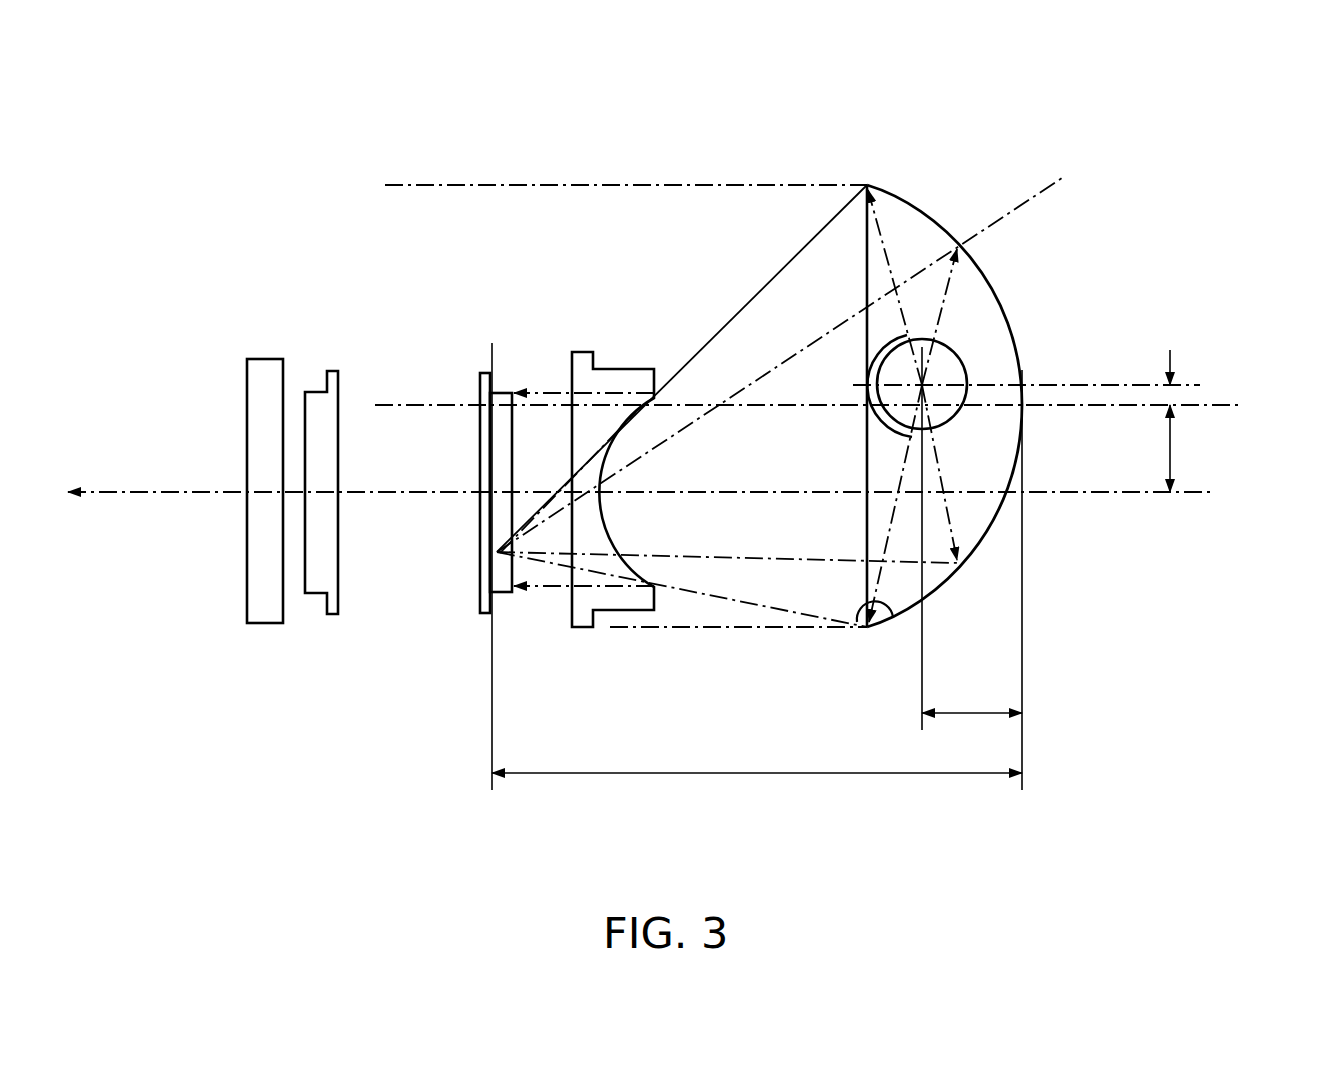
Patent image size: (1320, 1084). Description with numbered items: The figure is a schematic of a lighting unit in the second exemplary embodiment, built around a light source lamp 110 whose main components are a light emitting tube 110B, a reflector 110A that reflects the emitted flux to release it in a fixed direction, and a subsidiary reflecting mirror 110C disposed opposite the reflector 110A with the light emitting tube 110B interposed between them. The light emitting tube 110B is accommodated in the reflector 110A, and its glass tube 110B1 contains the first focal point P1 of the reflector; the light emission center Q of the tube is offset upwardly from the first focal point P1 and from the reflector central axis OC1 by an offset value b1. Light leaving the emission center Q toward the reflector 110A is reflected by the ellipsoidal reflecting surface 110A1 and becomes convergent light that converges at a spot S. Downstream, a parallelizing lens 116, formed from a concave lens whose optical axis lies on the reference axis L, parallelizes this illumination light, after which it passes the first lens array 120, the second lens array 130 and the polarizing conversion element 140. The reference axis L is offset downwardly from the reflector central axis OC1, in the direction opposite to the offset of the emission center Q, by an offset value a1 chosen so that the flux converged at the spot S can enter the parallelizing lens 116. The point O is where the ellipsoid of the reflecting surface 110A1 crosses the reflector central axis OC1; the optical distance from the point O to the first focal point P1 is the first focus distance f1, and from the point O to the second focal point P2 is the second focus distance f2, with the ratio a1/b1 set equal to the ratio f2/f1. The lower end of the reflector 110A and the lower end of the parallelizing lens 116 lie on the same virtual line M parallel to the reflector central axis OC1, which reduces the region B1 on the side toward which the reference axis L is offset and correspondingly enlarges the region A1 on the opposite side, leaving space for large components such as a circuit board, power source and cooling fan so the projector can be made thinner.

The light source lamp 110 is at (1127, 135).
The reflector 110A is at (980, 247).
The light emitting tube 110B is at (968, 347).
The subsidiary reflecting mirror 110C is at (882, 331).
The reflecting surface 110A1 is at (866, 630).
The glass tube 110B1 is at (970, 369).
The parallelizing lens 116 is at (611, 612).
The first lens array 120 is at (487, 614).
The second lens array 130 is at (329, 616).
The polarizing conversion element 140 is at (270, 358).
The region A1 is at (683, 247).
The reflector central axis OC1 is at (1228, 405).
The reference axis L is at (1058, 494).
The light emission center Q is at (911, 377).
The first focal point P1 is at (926, 426).
The second focal point P2 is at (495, 392).
The point O is at (1025, 407).
The spot S is at (493, 550).
The virtual line M is at (731, 630).
The region B1 is at (679, 610).
The offset value a1 is at (1191, 448).
The offset value b1 is at (1191, 366).
The first focus distance f1 is at (972, 698).
The second focus distance f2 is at (757, 755).